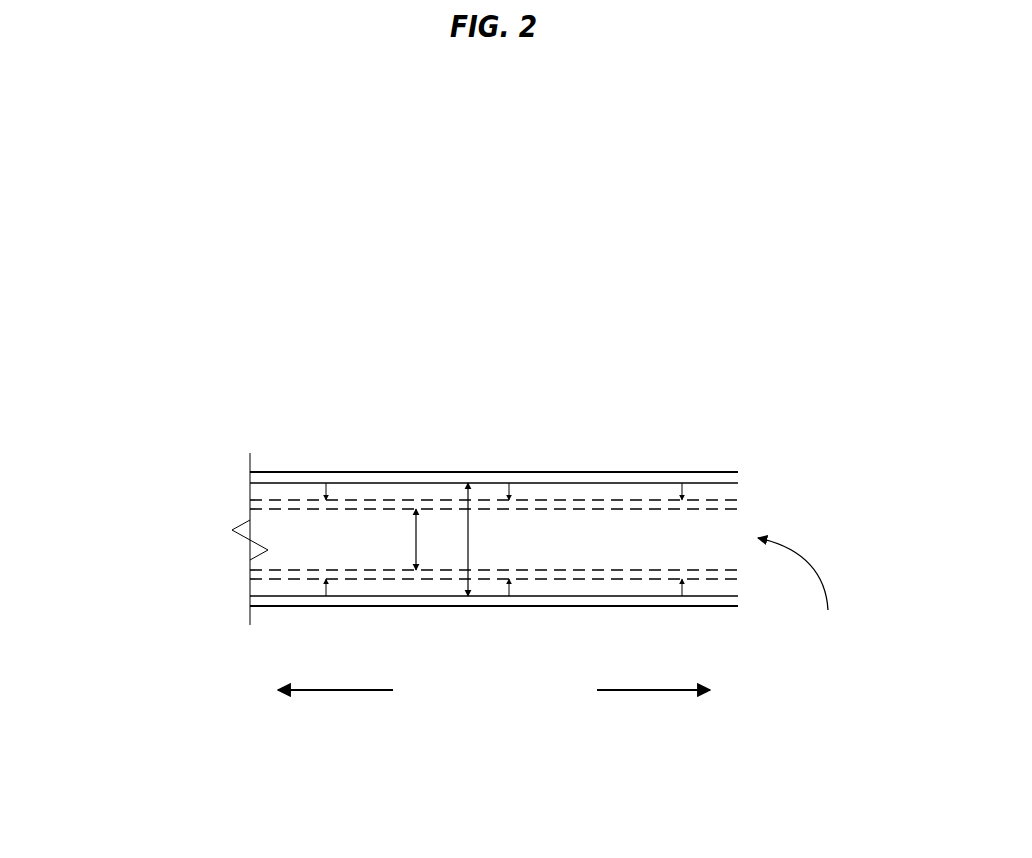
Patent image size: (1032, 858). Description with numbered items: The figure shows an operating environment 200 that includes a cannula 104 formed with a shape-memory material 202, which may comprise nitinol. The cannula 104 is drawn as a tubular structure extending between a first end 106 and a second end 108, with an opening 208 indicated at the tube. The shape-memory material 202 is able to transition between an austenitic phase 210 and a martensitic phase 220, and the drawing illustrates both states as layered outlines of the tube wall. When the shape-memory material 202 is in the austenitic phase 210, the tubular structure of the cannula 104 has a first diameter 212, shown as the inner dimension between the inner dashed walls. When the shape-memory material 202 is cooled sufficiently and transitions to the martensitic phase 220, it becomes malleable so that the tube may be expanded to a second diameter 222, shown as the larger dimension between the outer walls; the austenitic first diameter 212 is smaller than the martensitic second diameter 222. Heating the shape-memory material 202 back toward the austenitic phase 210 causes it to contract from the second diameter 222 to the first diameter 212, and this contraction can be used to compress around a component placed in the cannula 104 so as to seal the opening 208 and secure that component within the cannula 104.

The operating environment 200 is at (513, 104).
The cannula 104 is at (327, 378).
The shape-memory material 202 is at (250, 597).
The martensitic phase 220 is at (468, 472).
The austenitic phase 210 is at (416, 580).
The first diameter 212 is at (416, 539).
The second diameter 222 is at (468, 526).
The opening 208 is at (838, 587).
The first end 106 is at (332, 692).
The second end 108 is at (635, 693).